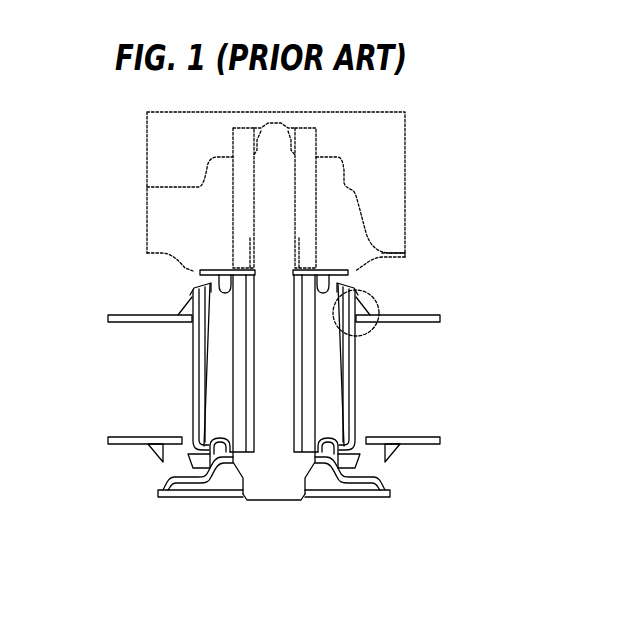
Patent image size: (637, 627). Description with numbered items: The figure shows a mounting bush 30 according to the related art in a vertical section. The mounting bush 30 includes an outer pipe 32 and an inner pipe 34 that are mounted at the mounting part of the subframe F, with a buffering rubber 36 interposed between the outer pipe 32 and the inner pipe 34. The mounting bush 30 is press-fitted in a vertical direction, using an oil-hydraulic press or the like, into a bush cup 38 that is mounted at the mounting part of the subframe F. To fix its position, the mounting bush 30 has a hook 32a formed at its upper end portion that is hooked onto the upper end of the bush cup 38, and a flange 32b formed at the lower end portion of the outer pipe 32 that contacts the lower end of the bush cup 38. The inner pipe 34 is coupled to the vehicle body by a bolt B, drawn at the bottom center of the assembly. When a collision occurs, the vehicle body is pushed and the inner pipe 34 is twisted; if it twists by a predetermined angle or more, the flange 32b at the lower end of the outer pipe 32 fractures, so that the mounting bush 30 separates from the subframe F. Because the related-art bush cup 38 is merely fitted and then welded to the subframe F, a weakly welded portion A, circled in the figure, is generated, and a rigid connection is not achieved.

The mounting bush 30 is at (186, 281).
The outer pipe 32 is at (358, 355).
The hook 32a is at (355, 293).
The flange 32b is at (369, 480).
The inner pipe 34 is at (238, 363).
The buffering rubber 36 is at (218, 405).
The bush cup 38 is at (356, 392).
The weakly welded portion A is at (363, 326).
The bolt B is at (268, 483).
The subframe F is at (118, 312).